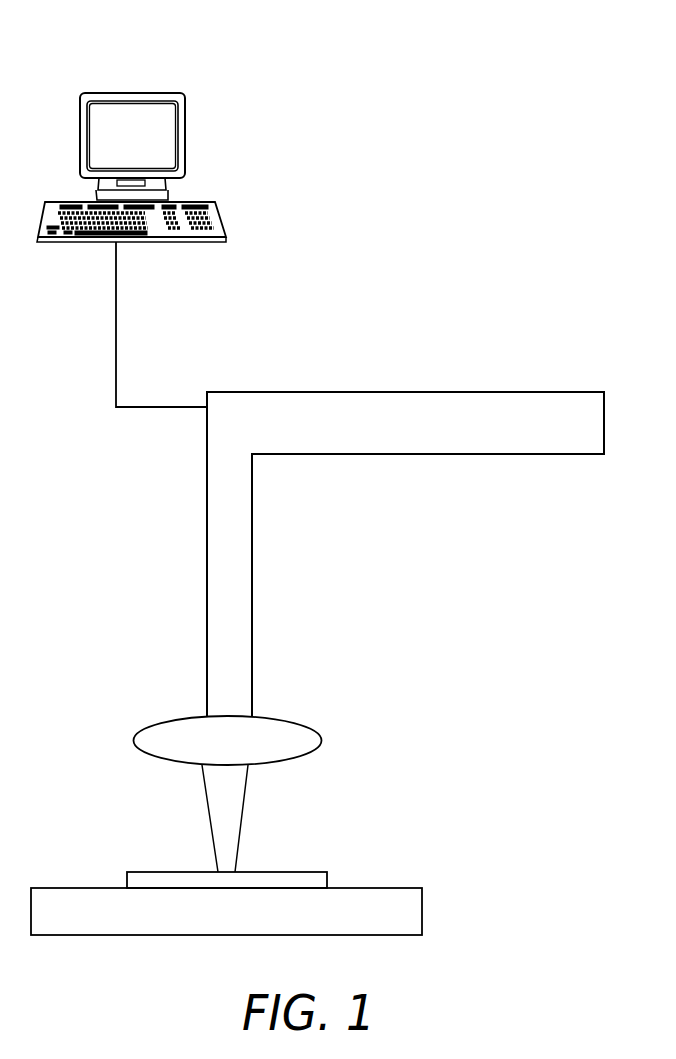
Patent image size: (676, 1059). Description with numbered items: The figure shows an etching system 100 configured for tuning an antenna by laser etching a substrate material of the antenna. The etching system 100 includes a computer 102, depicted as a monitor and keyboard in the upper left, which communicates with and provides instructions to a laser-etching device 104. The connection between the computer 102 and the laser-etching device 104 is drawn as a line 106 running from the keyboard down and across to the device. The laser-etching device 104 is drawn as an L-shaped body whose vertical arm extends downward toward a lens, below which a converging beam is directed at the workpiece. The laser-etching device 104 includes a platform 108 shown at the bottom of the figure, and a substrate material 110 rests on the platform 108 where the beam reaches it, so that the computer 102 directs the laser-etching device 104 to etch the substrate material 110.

The etching system 100 is at (565, 50).
The computer 102 is at (174, 93).
The laser-etching device 104 is at (585, 392).
The cable 106 is at (117, 317).
The platform 108 is at (405, 888).
The substrate material 110 is at (318, 872).